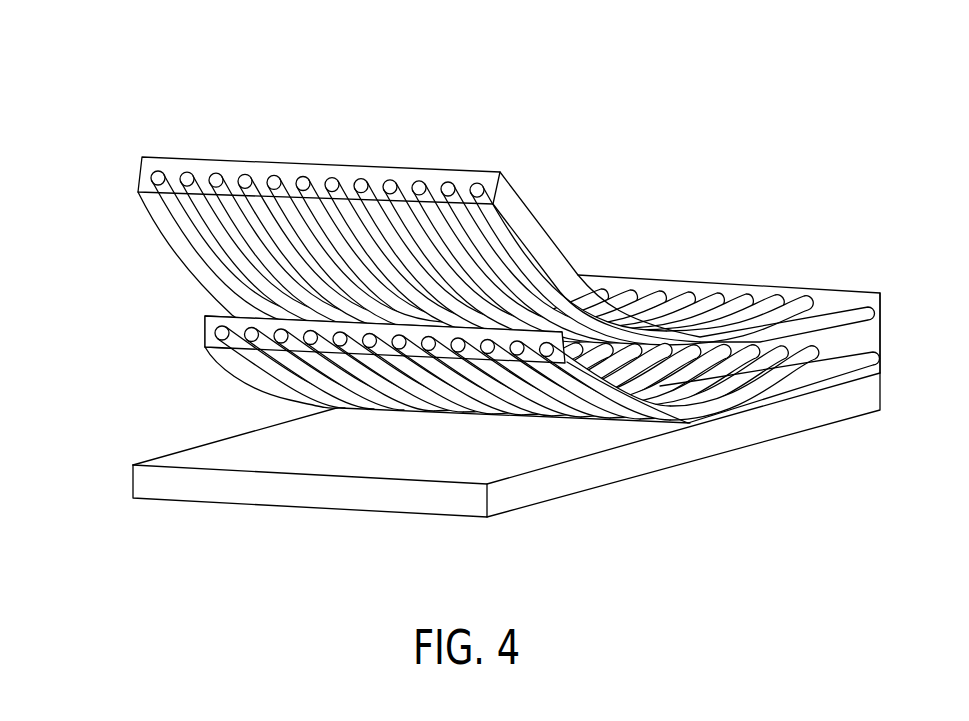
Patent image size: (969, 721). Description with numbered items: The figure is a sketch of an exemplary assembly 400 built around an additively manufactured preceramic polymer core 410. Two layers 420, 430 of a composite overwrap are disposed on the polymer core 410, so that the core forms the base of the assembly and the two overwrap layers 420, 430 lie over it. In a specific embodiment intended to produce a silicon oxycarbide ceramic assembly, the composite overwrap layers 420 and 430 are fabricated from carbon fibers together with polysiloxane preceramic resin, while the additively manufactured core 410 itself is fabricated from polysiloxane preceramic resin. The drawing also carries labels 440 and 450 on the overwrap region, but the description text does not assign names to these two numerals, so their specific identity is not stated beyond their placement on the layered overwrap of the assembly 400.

The assembly 400 is at (783, 87).
The additively manufactured preceramic polymer core 410 is at (597, 494).
The composite overwrap layer 420 is at (113, 320).
The composite overwrap layer 430 is at (459, 216).
The optical fiber 440 is at (308, 160).
The holder plate 450 is at (408, 159).